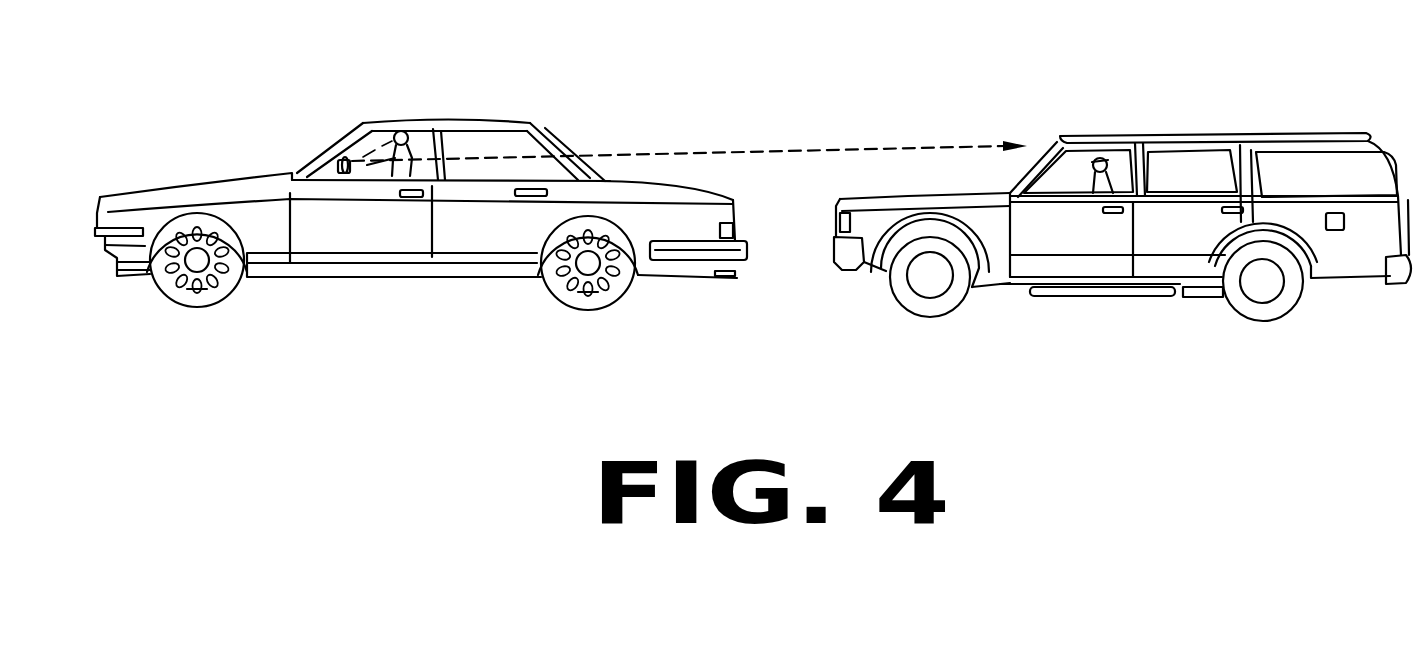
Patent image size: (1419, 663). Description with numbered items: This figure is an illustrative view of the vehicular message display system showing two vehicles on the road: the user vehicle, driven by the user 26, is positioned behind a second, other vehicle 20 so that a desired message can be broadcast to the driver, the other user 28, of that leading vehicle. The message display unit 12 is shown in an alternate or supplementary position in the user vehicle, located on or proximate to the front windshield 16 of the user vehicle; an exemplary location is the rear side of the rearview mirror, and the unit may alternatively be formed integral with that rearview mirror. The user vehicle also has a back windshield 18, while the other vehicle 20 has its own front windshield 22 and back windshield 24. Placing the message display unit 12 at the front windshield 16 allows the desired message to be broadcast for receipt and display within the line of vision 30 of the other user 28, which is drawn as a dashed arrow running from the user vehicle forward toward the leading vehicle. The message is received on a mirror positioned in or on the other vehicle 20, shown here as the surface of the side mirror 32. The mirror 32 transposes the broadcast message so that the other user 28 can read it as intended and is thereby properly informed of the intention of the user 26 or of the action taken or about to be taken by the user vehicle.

The message display unit 12 is at (1122, 177).
The front windshield 16 is at (1017, 174).
The back windshield 18 is at (1380, 143).
The other vehicle 20 is at (421, 171).
The front windshield 22 is at (298, 167).
The back windshield 24 is at (537, 127).
The user 26 is at (1137, 143).
The other user 28 is at (436, 128).
The line of vision 30 is at (740, 152).
The side mirror 32 is at (331, 157).